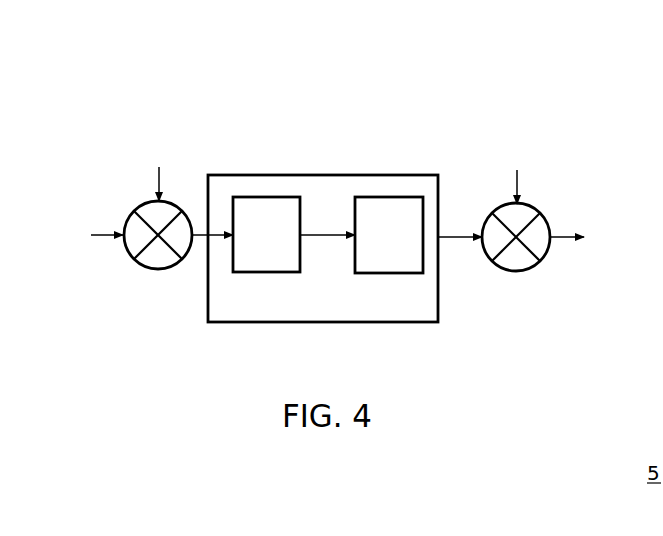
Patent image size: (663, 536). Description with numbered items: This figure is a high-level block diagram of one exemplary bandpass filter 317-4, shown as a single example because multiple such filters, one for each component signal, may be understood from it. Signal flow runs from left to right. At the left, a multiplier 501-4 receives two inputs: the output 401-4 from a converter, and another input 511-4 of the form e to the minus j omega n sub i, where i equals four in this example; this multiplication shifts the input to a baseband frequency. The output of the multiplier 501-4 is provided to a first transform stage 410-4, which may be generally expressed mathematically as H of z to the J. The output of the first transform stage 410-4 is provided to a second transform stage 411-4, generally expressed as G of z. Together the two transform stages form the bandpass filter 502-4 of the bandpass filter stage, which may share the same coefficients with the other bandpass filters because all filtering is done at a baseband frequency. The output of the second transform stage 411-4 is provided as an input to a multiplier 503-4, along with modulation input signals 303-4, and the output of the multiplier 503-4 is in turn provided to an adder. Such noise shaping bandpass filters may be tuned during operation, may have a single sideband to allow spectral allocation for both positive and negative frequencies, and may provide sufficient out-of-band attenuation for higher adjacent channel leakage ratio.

The bandpass filter 317-4 is at (576, 127).
The output from converter 401-4 is at (102, 237).
The multiplier 501-4 is at (133, 217).
The input 511-4 is at (225, 134).
The bandpass filter 502-4 is at (352, 312).
The first transform stage 410-4 is at (292, 244).
The second transform stage 411-4 is at (413, 245).
The multiplier 503-4 is at (492, 212).
The modulation input signals 303-4 is at (583, 179).